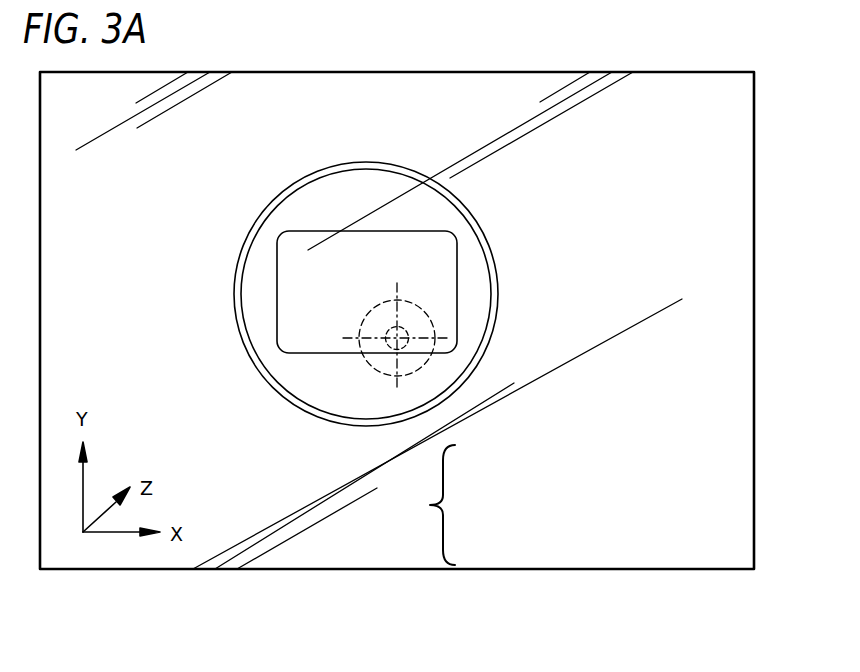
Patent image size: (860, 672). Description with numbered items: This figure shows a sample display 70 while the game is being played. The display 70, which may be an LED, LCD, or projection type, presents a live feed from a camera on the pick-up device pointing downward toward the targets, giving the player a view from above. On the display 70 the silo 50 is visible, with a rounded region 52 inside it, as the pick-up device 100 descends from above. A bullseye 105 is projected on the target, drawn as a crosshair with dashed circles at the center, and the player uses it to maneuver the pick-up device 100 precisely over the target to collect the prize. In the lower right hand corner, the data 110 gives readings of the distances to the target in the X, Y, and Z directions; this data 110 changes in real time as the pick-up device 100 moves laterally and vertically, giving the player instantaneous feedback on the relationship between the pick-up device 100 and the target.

The display 70 is at (686, 72).
The silo 50 is at (498, 293).
The rectangular target region 52 is at (317, 232).
The bullseye 105 is at (418, 305).
The pick-up device 100 is at (375, 368).
The data 110 is at (567, 505).